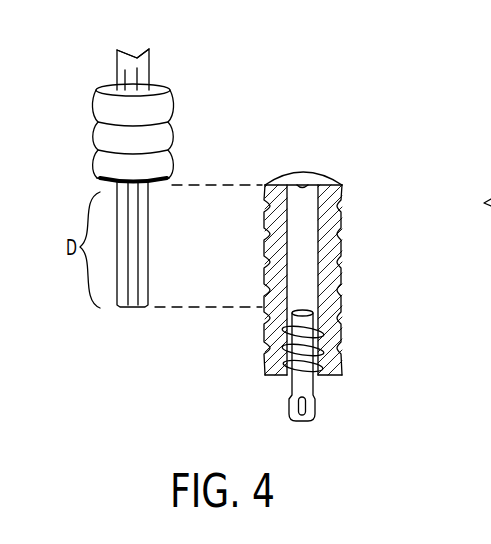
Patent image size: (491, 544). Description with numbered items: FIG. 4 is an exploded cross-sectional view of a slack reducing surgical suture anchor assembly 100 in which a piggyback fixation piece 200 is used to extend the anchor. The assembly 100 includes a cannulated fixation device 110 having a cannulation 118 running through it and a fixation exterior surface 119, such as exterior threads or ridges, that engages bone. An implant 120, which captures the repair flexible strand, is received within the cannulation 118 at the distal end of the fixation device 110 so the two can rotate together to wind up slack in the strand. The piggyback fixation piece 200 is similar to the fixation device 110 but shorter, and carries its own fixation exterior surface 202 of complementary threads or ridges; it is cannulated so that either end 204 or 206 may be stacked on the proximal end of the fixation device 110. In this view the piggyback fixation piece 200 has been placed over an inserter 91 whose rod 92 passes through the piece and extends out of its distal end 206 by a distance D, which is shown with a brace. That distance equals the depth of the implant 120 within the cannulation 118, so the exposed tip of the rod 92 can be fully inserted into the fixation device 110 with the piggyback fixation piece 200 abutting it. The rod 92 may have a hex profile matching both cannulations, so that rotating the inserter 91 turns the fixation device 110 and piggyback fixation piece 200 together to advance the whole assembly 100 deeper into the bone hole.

The inserter 91 is at (130, 60).
The rod 92 is at (130, 308).
The suture anchor assembly 100 is at (368, 243).
The fixation device 110 is at (344, 248).
The cannulation 118 is at (357, 201).
The fixation exterior surface 119 is at (343, 262).
The implant 120 is at (281, 392).
The piggyback fixation piece 200 is at (172, 105).
The fixation exterior surface 202 is at (143, 137).
The end 204 is at (158, 89).
The distal end 206 is at (166, 181).